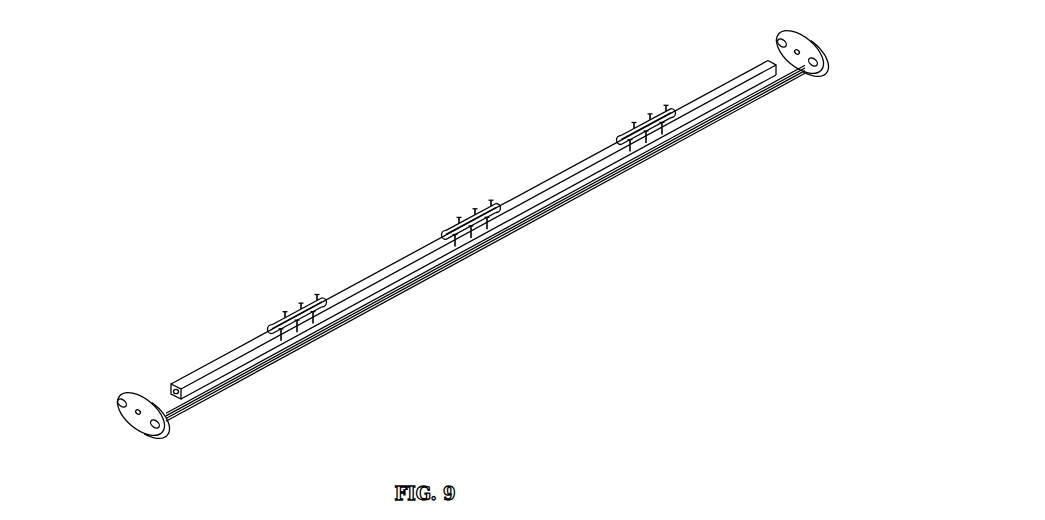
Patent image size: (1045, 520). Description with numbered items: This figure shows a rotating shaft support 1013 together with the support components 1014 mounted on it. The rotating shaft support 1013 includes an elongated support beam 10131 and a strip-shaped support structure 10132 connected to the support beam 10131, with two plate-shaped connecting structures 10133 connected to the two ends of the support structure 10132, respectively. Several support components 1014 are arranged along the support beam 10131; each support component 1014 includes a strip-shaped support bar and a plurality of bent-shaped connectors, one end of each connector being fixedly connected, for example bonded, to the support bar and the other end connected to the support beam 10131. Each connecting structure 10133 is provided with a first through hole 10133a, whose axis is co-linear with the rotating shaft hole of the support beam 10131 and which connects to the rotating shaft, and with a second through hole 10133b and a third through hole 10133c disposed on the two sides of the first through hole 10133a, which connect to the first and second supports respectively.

The rotating shaft support 1013 is at (198, 303).
The support beam 10131 is at (217, 358).
The support structure 10132 is at (167, 401).
The connecting structure 10133 is at (140, 394).
The first through hole 10133a is at (129, 416).
The second through hole 10133b is at (111, 405).
The third through hole 10133c is at (154, 435).
The support component 1014 is at (649, 116).